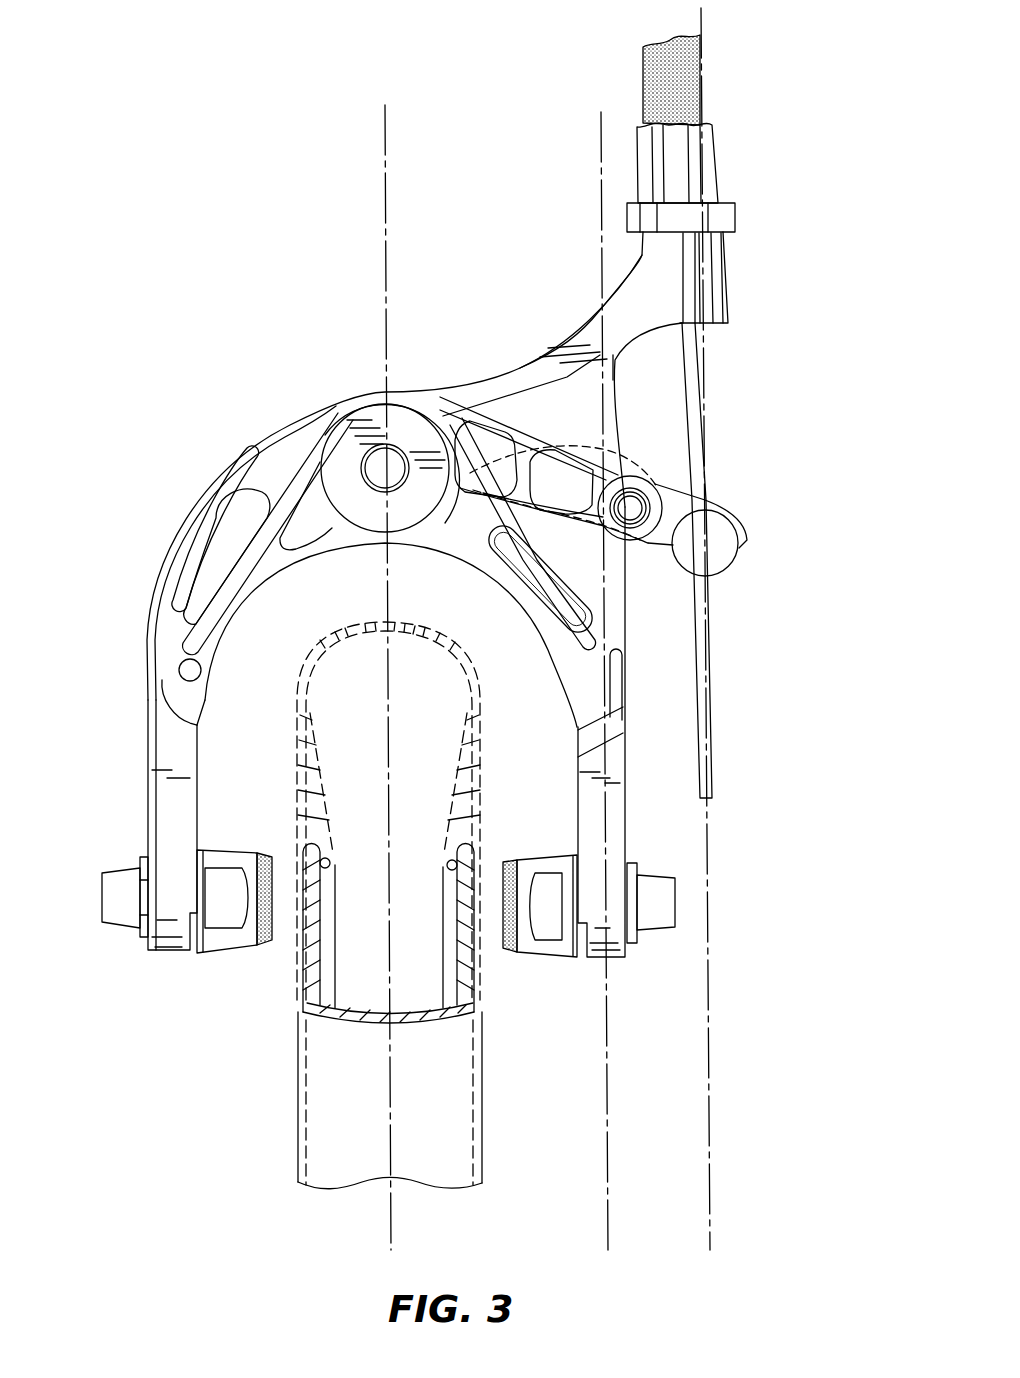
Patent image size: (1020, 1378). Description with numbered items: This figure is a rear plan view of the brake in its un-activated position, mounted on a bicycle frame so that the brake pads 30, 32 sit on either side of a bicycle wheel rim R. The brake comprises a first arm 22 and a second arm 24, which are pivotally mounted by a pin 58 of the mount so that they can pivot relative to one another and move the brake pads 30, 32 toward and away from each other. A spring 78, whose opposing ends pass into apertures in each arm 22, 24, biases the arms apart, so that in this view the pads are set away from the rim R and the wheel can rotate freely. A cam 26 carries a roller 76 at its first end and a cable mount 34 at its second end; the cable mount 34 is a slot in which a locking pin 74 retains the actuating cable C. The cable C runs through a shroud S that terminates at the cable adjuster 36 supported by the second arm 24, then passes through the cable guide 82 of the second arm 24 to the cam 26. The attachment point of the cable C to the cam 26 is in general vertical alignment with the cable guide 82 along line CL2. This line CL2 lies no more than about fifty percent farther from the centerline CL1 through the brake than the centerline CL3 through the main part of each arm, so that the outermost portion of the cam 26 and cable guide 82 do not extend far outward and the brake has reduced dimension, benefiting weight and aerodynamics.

The first arm 22 is at (157, 752).
The second arm 24 is at (615, 808).
The cam 26 is at (666, 485).
The brake pad 30 is at (263, 943).
The brake pad 32 is at (510, 860).
The cable mount 34 is at (763, 528).
The cable adjuster 36 is at (710, 157).
The pin 58 is at (333, 410).
The locking pin 74 is at (723, 563).
The roller 76 is at (602, 432).
The spring 78 is at (385, 392).
The cable guide 82 is at (718, 280).
The shroud S is at (710, 81).
The actuating cable C is at (695, 392).
The bicycle wheel rim R is at (468, 980).
The centerline CL1 is at (408, 676).
The line CL2 is at (724, 629).
The centerline CL3 is at (580, 676).